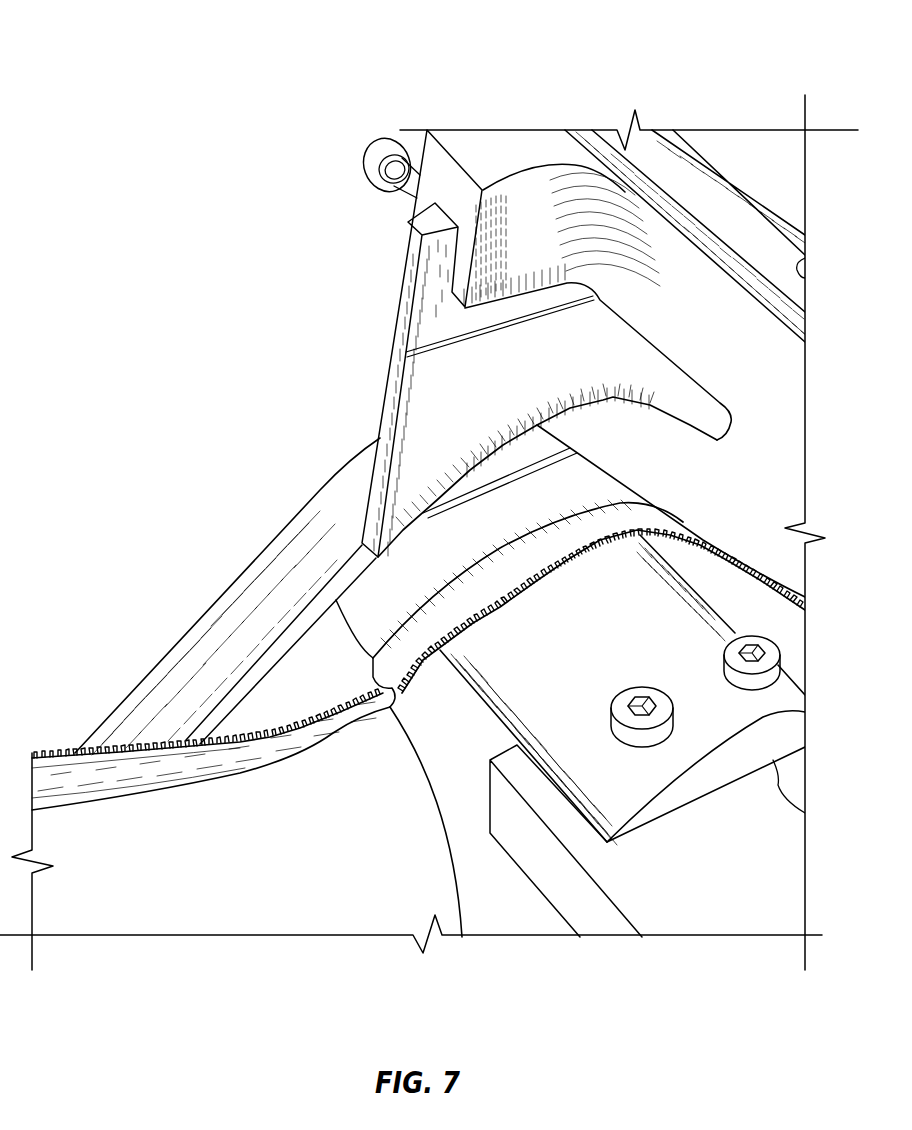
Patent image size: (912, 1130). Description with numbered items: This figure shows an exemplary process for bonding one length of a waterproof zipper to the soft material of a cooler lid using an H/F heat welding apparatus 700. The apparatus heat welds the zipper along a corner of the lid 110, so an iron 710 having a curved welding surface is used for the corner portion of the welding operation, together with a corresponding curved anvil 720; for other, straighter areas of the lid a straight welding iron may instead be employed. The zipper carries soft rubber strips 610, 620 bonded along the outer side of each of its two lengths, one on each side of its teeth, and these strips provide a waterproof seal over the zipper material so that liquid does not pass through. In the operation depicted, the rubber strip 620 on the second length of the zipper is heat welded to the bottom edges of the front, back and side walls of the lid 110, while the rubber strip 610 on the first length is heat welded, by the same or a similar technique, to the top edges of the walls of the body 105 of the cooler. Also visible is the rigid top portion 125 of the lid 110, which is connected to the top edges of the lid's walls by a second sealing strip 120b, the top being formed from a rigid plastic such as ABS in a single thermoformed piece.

The H/F heat welding apparatus 700 is at (158, 60).
The iron 710 is at (470, 433).
The lid 110 is at (590, 472).
The rubber strip 620 is at (648, 522).
The top portion 125 is at (267, 567).
The second sealing strip 120b is at (230, 697).
The rubber strip 610 is at (62, 778).
The curved anvil 720 is at (603, 650).
The body 105 is at (295, 870).